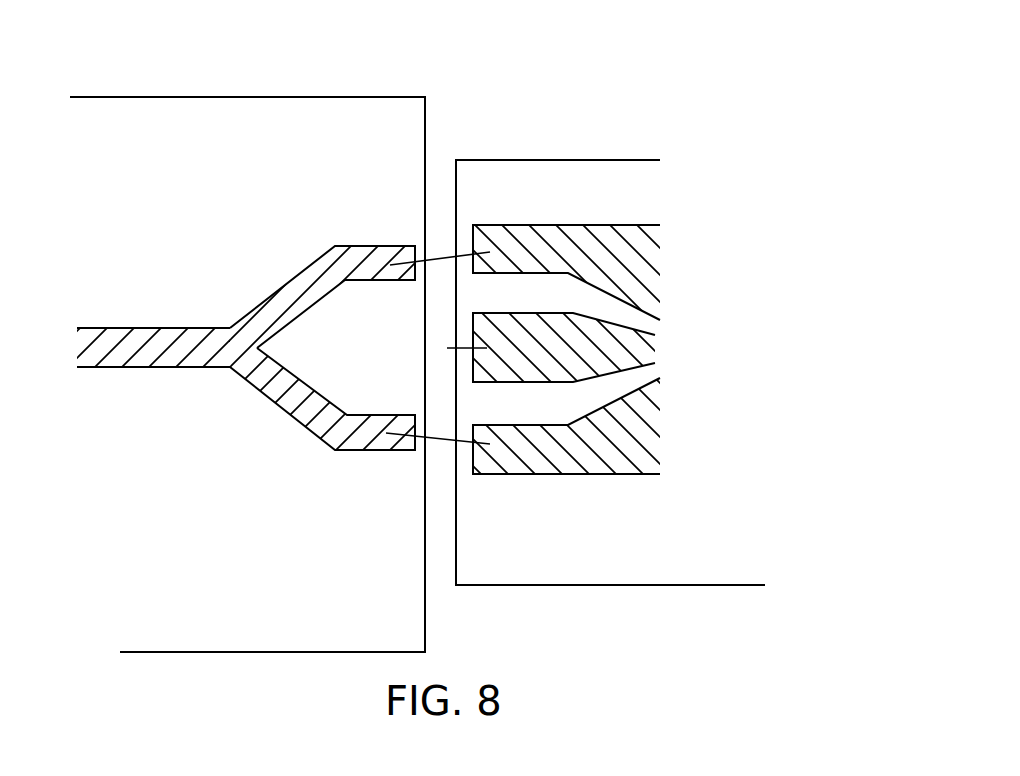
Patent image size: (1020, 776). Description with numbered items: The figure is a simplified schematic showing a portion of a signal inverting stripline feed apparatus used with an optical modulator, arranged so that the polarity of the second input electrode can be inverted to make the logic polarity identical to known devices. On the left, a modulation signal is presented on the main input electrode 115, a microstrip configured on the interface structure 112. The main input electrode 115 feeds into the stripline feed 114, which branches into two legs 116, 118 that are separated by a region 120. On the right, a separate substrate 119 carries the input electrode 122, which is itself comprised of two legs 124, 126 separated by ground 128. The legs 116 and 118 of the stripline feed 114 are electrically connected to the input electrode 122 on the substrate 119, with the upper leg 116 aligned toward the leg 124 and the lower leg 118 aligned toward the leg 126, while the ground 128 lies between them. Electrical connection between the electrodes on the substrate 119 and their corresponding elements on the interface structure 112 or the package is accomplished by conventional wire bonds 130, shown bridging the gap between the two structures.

The interface structure 112 is at (150, 133).
The stripline feed 114 is at (193, 473).
The main input electrode 115 is at (135, 343).
The leg of stripline feed 116 is at (302, 287).
The leg of stripline feed 118 is at (362, 440).
The region 120 is at (326, 372).
The wire bonds 130 is at (444, 412).
The substrate 119 is at (590, 178).
The input electrode 122 is at (561, 494).
The leg of input electrode 124 is at (613, 243).
The ground 128 is at (607, 347).
The leg of input electrode 126 is at (608, 455).